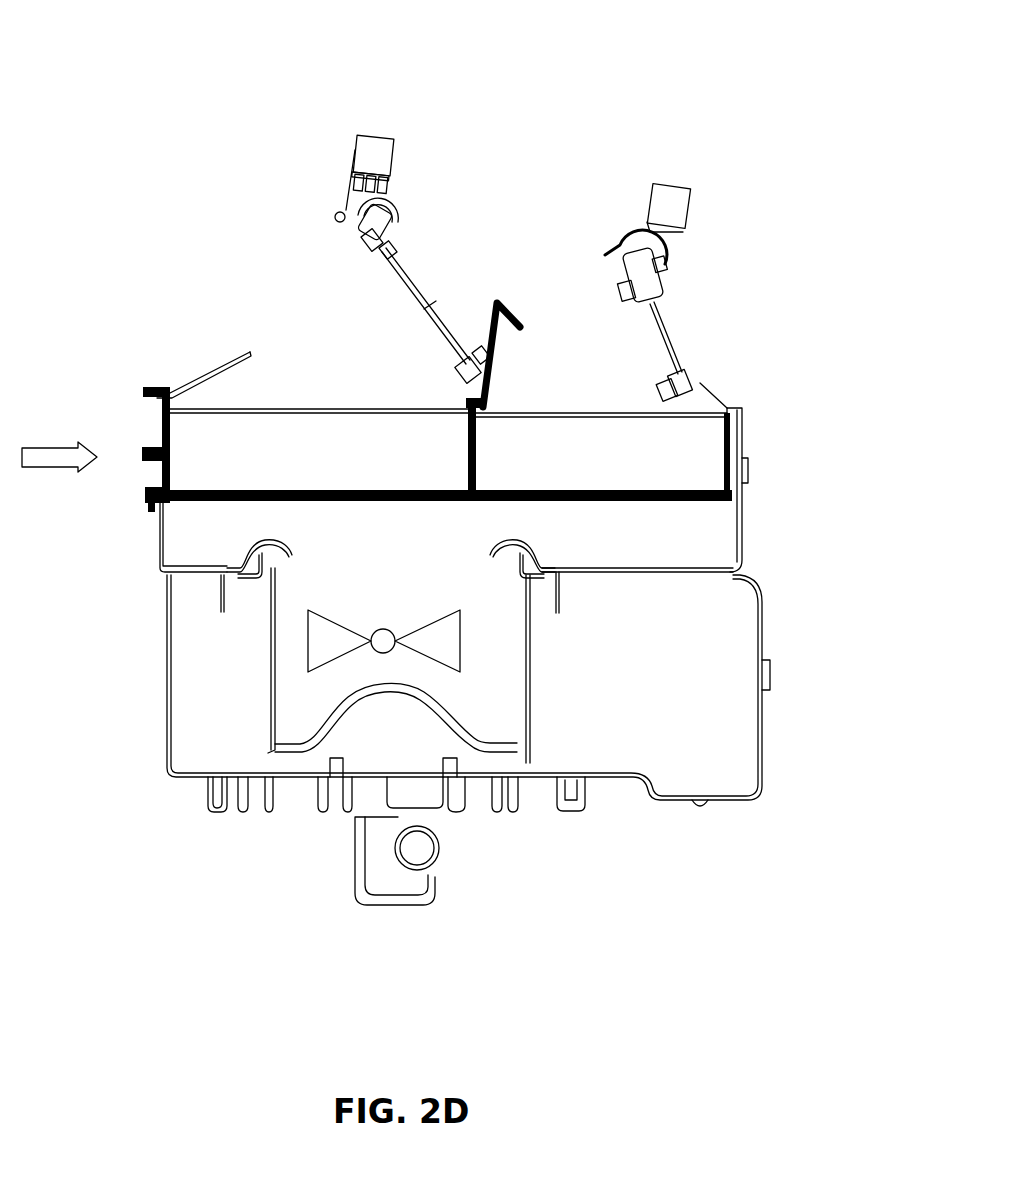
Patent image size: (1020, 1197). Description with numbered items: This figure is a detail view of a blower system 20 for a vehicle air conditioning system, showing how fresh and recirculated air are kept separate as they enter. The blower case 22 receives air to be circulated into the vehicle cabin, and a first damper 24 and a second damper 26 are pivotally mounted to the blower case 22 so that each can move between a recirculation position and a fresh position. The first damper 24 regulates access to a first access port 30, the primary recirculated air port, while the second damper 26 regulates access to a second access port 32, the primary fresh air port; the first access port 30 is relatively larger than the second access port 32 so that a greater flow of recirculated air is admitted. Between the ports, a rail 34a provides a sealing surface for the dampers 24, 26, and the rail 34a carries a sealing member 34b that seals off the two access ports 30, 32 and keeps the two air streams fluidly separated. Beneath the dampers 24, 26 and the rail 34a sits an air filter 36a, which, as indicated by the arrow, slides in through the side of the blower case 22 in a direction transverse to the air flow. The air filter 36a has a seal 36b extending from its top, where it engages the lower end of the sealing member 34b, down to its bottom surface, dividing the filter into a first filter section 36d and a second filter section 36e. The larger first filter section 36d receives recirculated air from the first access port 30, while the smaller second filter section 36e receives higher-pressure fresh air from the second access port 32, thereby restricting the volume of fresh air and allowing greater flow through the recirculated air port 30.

The blower system 20 is at (807, 646).
The blower case 22 is at (768, 767).
The first damper 24 is at (418, 243).
The second damper 26 is at (673, 327).
The first access port 30 is at (333, 396).
The second access port 32 is at (593, 387).
The rail 34a is at (517, 307).
The sealing member 34b is at (482, 387).
The air filter 36a is at (705, 542).
The seal 36b is at (470, 472).
The first filter section 36d is at (269, 462).
The second filter section 36e is at (607, 462).